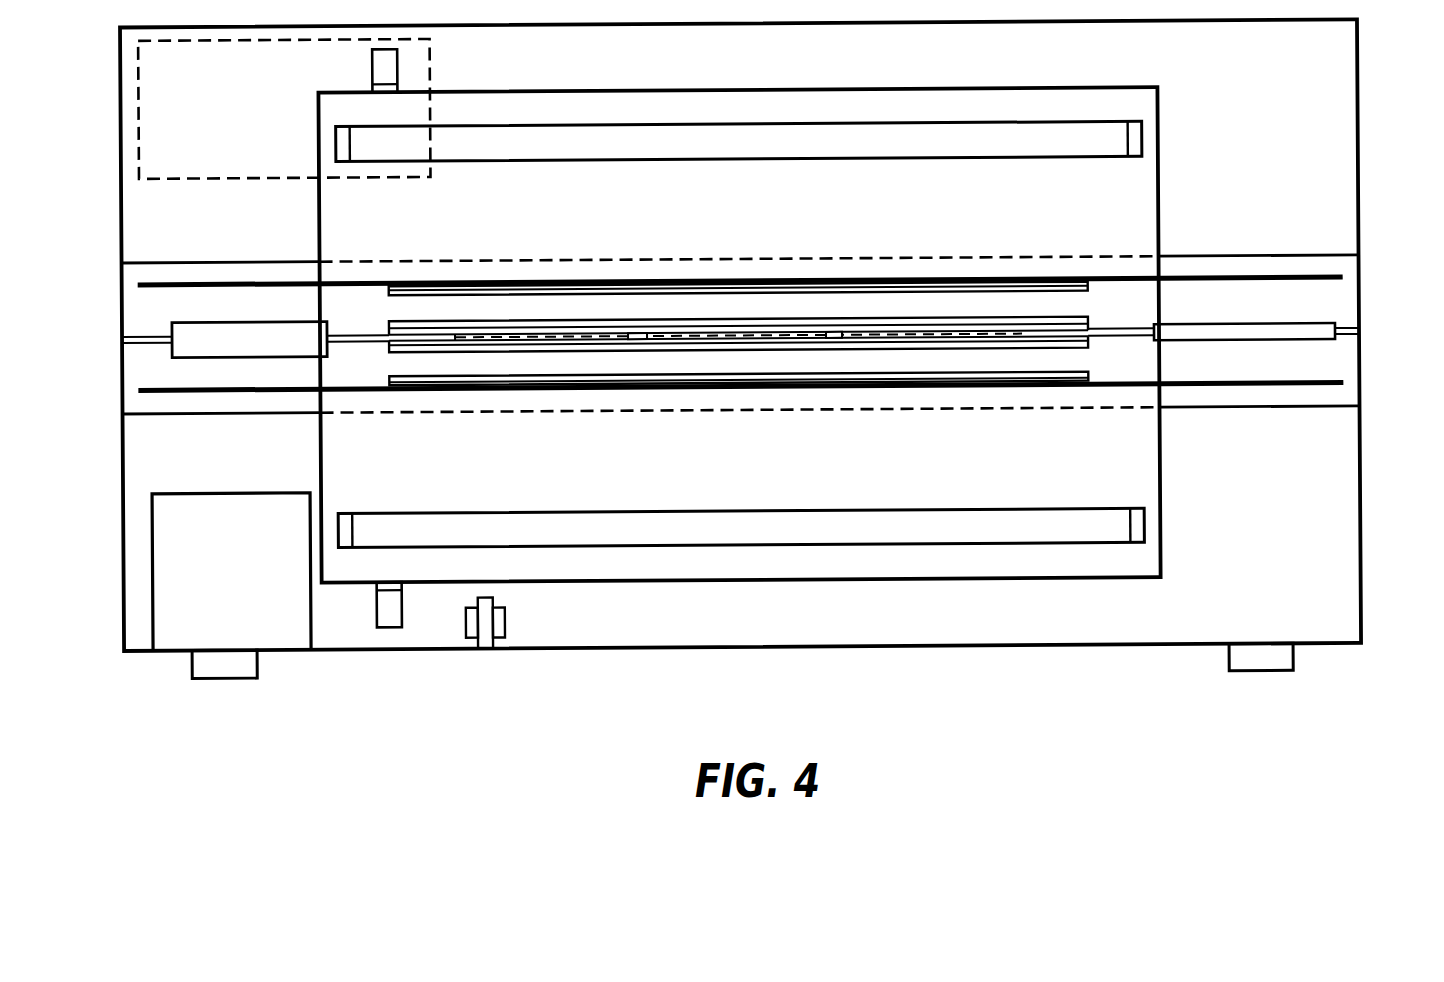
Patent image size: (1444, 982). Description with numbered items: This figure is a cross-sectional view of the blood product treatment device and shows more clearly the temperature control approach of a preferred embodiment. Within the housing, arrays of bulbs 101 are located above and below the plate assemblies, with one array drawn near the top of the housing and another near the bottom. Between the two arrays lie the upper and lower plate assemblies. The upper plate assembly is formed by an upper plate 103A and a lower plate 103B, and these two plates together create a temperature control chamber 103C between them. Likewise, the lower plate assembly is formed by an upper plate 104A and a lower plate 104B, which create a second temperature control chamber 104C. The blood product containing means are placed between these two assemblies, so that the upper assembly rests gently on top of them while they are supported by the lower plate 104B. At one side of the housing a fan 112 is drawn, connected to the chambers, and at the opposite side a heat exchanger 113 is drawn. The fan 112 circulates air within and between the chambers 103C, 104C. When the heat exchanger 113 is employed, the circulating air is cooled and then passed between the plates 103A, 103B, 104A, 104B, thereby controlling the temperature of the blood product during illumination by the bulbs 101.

The bulbs 101 is at (1117, 144).
The upper plate of upper plate assembly 103A is at (810, 253).
The lower plate of upper plate assembly 103B is at (808, 314).
The temperature control chamber 103C is at (740, 260).
The upper plate of lower plate assembly 104A is at (815, 356).
The lower plate of lower plate assembly 104B is at (818, 418).
The temperature control chamber 104C is at (741, 417).
The fan 112 is at (185, 335).
The heat exchanger 113 is at (1300, 336).